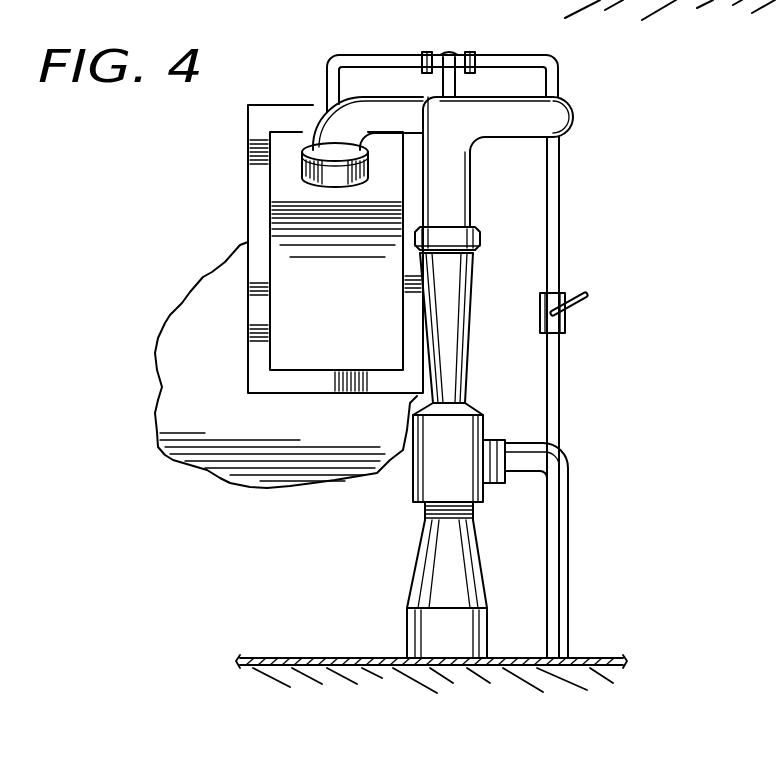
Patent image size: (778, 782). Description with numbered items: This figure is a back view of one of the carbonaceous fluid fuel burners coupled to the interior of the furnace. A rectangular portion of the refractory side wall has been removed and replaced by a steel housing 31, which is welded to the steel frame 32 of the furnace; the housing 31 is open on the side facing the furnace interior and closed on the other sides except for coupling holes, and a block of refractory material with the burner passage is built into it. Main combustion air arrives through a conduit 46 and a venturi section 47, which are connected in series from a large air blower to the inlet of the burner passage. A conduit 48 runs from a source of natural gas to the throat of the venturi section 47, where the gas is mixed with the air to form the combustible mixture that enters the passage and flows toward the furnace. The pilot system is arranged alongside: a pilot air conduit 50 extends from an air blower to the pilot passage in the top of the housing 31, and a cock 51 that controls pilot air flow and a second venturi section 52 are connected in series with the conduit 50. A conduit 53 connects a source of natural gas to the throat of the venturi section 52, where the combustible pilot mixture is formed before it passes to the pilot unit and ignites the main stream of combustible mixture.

The steel housing 31 is at (320, 353).
The steel frame 32 is at (360, 463).
The conduit 46 is at (465, 185).
The venturi section 47 is at (470, 377).
The conduit 48 is at (567, 565).
The pilot air conduit 50 is at (395, 25).
The cock 51 is at (587, 307).
The venturi section 52 is at (453, 56).
The conduit 53 is at (455, 82).